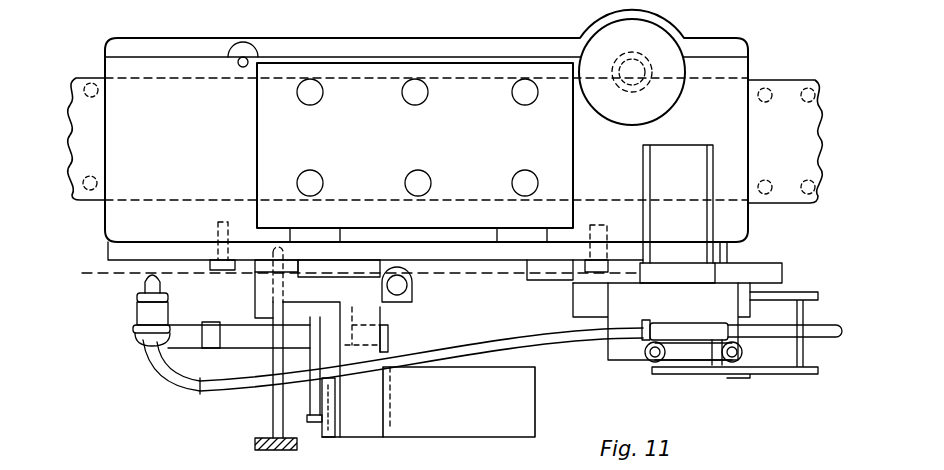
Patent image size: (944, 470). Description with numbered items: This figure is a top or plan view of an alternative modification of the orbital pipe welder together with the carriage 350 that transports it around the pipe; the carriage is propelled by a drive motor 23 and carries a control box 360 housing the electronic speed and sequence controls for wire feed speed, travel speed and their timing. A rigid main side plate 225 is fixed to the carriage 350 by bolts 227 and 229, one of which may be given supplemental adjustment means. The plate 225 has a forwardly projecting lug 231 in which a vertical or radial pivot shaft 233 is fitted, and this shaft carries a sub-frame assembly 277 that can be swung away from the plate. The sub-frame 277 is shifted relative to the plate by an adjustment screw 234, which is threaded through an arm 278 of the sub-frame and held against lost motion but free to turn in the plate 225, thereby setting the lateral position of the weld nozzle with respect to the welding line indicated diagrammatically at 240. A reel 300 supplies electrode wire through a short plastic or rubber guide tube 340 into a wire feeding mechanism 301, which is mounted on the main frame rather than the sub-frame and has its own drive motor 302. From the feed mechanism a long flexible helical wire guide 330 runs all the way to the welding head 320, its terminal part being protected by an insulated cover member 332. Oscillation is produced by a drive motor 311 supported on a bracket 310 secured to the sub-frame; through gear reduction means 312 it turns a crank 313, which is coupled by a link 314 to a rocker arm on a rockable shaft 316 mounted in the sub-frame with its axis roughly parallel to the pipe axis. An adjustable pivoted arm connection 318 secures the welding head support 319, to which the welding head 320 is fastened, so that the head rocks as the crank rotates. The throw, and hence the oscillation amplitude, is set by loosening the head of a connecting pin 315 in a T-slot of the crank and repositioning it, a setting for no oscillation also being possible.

The drive motor 23 is at (663, 97).
The main side plate 225 is at (497, 258).
The bolt 227 is at (216, 228).
The bolt 229 is at (608, 228).
The lug 231 is at (413, 268).
The pivot shaft 233 is at (410, 286).
The adjustment screw 234 is at (273, 407).
The welding line 240 is at (118, 278).
The sub-frame assembly 277 is at (380, 307).
The arm 278 is at (350, 292).
The reel 300 is at (780, 372).
The wire feeding mechanism 301 is at (628, 353).
The drive motor 302 is at (653, 157).
The bracket 310 is at (390, 346).
The drive motor 311 is at (520, 367).
The gear reduction means 312 is at (395, 397).
The crank 313 is at (328, 438).
The link 314 is at (315, 395).
The connecting pin 315 is at (308, 422).
The rockable shaft 316 is at (320, 354).
The adjustable pivoted arm connection 318 is at (228, 336).
The welding head support 319 is at (177, 323).
The welding head 320 is at (138, 312).
The flexible helical wire guide 330 is at (535, 330).
The cover member 332 is at (190, 392).
The guide tube 340 is at (832, 325).
The carriage 350 is at (736, 122).
The control box 360 is at (470, 70).